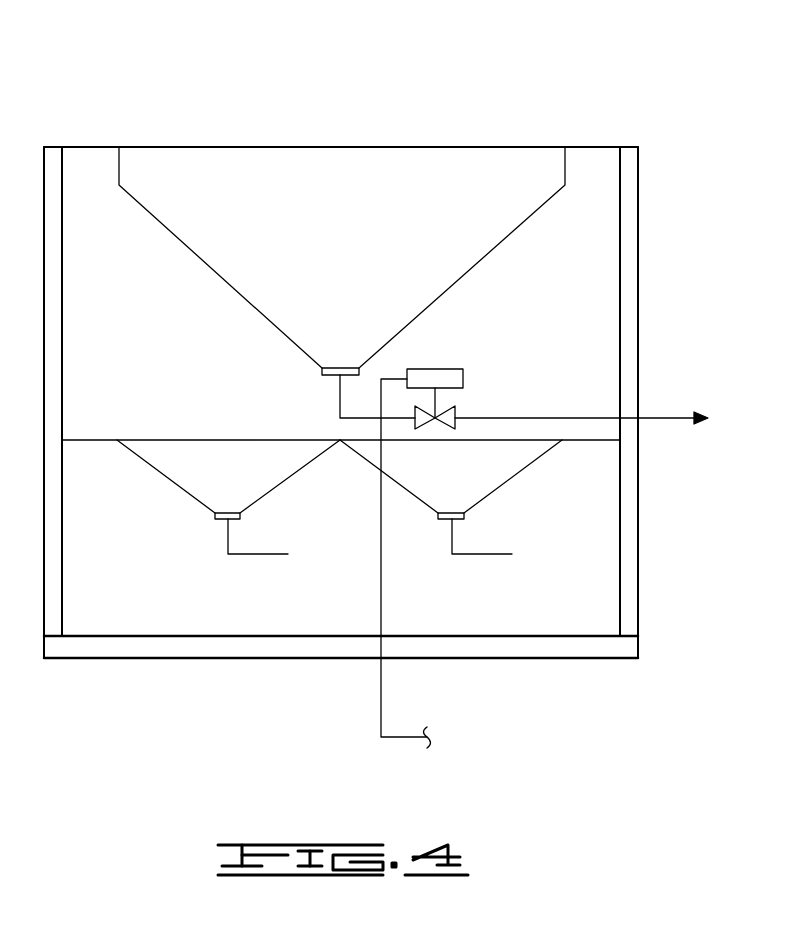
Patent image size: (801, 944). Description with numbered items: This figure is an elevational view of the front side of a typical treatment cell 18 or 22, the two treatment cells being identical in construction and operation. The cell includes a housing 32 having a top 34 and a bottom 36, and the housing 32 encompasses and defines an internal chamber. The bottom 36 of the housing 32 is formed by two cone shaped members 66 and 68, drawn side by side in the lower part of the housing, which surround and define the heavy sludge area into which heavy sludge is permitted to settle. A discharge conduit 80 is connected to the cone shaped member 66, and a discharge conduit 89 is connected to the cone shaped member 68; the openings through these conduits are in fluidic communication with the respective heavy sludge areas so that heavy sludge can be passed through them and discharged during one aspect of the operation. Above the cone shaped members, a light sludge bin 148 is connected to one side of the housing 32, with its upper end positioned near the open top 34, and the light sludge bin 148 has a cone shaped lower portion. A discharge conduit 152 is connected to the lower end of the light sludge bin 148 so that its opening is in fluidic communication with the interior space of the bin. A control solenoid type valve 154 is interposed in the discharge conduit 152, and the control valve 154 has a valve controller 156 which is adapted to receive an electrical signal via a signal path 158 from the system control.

The first treatment cell 18 is at (404, 340).
The feed hopper vessel 22 is at (404, 340).
The top 34 is at (613, 147).
The housing 32 is at (623, 235).
The light sludge bin 148 is at (471, 268).
The discharge conduit 152 is at (340, 410).
The valve controller 156 is at (435, 369).
The control solenoid type valve 154 is at (455, 408).
The cone shaped member 66 is at (298, 473).
The cone shaped member 68 is at (461, 506).
The bottom 36 is at (539, 458).
The discharge conduit 80 is at (255, 557).
The discharge conduit 89 is at (465, 557).
The signal path 158 is at (380, 692).